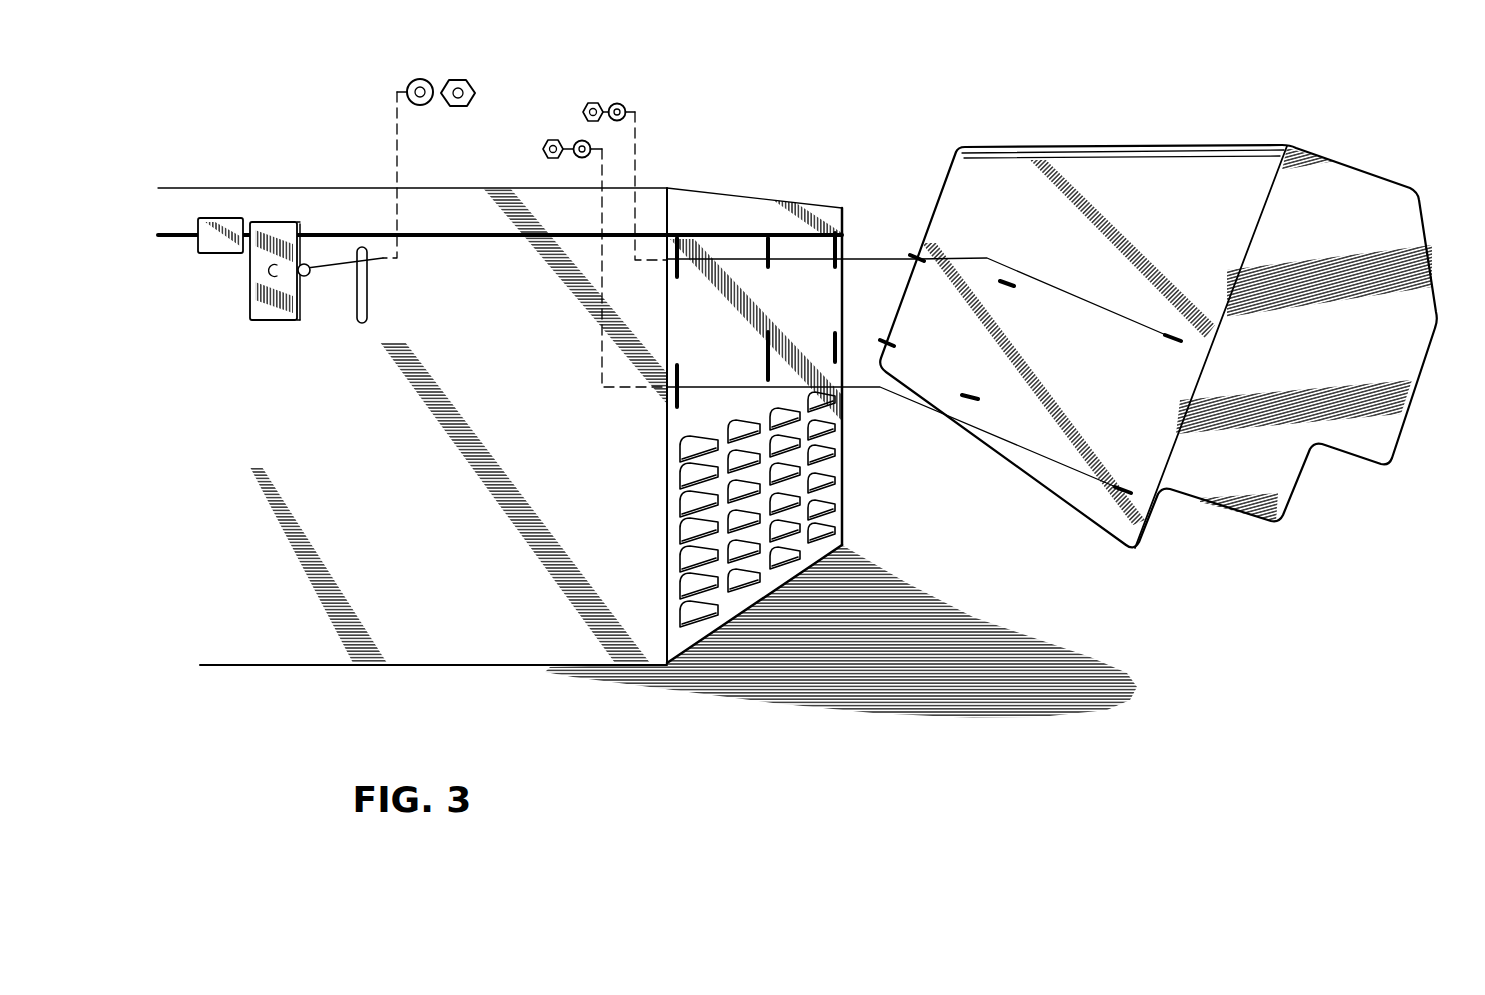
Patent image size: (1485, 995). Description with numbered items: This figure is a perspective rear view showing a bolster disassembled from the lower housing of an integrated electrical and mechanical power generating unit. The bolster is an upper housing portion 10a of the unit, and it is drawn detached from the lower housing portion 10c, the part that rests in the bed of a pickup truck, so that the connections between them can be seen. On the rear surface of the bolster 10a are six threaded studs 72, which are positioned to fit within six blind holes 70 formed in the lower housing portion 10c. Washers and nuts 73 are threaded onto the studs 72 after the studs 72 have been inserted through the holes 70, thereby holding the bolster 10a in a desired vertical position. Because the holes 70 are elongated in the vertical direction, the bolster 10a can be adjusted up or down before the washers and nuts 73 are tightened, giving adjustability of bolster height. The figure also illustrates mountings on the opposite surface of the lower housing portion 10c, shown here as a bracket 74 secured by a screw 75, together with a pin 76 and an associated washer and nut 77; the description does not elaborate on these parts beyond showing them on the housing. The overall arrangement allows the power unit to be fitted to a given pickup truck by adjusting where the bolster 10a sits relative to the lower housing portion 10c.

The upper housing portion 10a is at (1178, 226).
The lower housing portion 10c is at (405, 584).
The blind holes 70 is at (679, 276).
The threaded studs 72 is at (915, 258).
The washers and nuts 73 is at (548, 138).
The mounting bracket 74 is at (277, 323).
The screw 75 is at (310, 276).
The pin 76 is at (362, 325).
The washer and nut 77 is at (455, 80).